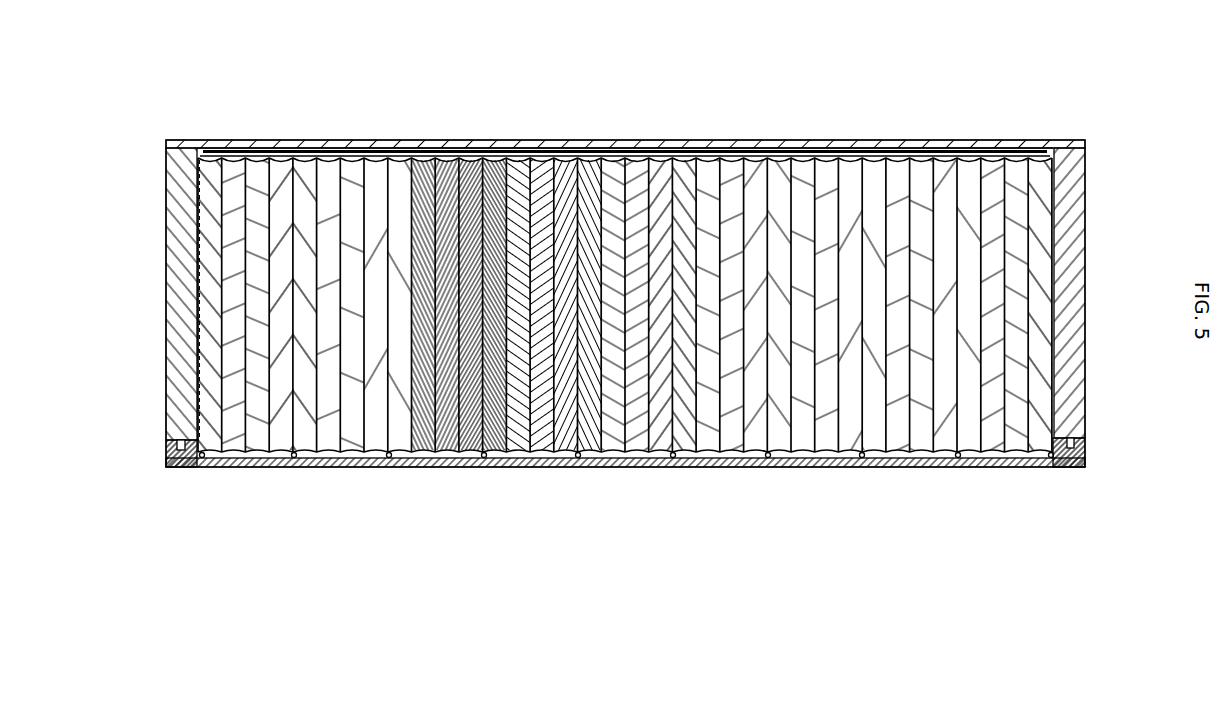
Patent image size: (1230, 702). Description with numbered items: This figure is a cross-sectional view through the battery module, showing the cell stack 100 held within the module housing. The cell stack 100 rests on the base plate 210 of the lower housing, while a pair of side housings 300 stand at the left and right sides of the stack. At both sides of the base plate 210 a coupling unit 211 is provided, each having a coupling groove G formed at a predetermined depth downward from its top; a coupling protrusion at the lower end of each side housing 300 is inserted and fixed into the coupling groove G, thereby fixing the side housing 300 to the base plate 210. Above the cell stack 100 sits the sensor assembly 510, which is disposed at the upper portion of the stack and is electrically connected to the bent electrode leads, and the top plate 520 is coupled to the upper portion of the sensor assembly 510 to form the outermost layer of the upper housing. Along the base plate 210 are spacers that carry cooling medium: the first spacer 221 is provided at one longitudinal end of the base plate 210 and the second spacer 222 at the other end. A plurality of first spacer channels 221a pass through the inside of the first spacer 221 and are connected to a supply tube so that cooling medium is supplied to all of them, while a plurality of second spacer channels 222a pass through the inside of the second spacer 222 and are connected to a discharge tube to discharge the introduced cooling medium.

The cell stack 100 is at (326, 172).
The base plate 210 is at (625, 491).
The coupling unit 211 is at (625, 441).
The first spacer 221 is at (625, 490).
The second spacer 222 is at (352, 467).
The first spacer channel 221a is at (627, 492).
The second spacer channel 222a is at (484, 460).
The side housing 300 is at (166, 320).
The sensor assembly 510 is at (876, 151).
The top plate 520 is at (936, 148).
The coupling groove G is at (181, 440).